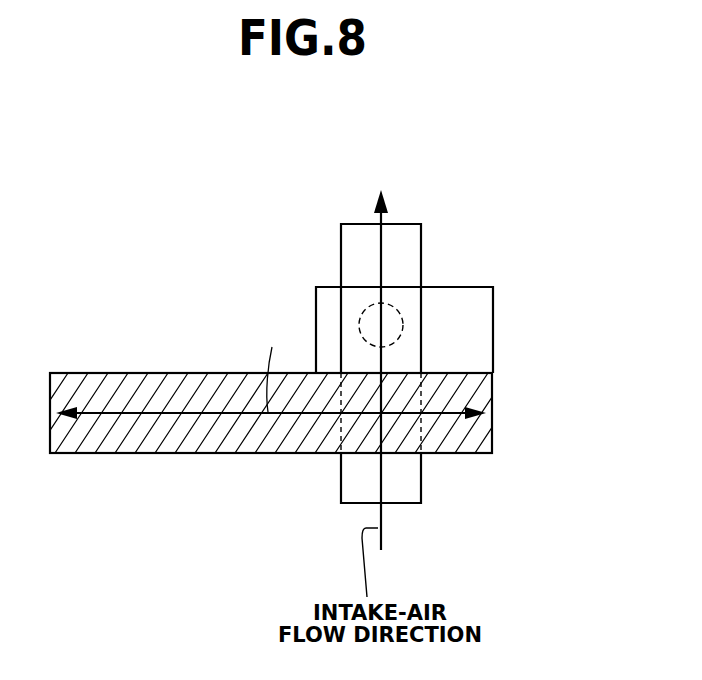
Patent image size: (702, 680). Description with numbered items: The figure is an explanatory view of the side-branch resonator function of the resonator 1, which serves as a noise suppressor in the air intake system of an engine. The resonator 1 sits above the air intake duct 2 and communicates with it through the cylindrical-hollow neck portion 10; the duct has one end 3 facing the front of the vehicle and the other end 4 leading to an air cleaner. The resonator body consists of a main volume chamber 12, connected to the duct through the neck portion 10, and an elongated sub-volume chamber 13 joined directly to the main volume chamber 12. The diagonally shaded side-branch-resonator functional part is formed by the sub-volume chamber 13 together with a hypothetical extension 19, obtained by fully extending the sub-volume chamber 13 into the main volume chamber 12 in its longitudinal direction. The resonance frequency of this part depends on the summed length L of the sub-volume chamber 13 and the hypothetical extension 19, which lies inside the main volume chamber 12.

The resonator 1 is at (143, 363).
The air intake duct 2 is at (404, 366).
The one end of air intake duct 3 is at (406, 484).
The other end of air intake duct 4 is at (410, 243).
The neck portion 10 is at (398, 310).
The main volume chamber 12 is at (473, 350).
The sub-volume chamber 13 is at (152, 433).
The hypothetical extension 19 is at (473, 431).